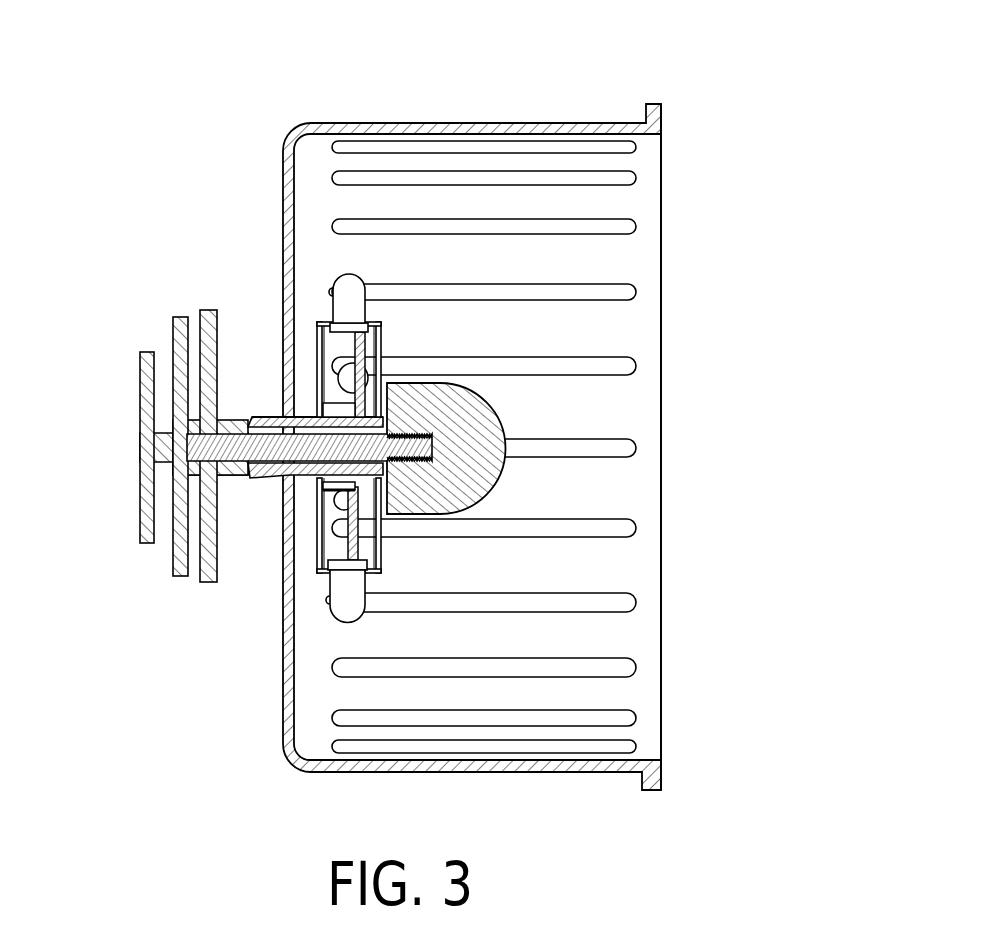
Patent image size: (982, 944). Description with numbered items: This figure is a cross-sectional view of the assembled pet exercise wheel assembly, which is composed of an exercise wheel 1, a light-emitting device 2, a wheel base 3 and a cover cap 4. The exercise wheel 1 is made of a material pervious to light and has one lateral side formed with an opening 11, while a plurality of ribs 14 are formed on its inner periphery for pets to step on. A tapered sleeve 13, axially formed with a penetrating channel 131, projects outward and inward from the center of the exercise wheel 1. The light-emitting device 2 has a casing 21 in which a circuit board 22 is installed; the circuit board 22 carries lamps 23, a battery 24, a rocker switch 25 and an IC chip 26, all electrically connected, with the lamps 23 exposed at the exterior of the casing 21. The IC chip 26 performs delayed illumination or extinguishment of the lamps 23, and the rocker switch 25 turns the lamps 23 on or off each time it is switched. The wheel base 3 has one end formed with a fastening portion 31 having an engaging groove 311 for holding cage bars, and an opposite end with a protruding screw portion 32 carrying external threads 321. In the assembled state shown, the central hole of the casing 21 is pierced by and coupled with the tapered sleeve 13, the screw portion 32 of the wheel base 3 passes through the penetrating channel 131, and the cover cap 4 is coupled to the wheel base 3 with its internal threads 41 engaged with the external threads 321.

The exercise wheel 1 is at (372, 125).
The opening 11 is at (635, 410).
The tapered sleeve 13 is at (370, 415).
The ribs 14 is at (512, 183).
The light-emitting device 2 is at (477, 439).
The casing 21 is at (312, 567).
The circuit board 22 is at (362, 538).
The lamps 23 is at (348, 278).
The battery 24 is at (330, 483).
The rocker switch 25 is at (342, 497).
The IC chip 26 is at (353, 375).
The wheel base 3 is at (148, 404).
The fastening portion 31 is at (174, 319).
The engaging groove 311 is at (192, 328).
The screw portion 32 is at (277, 447).
The cover cap 4 is at (470, 470).
The internal threads 41 is at (420, 437).
The external threads 321 is at (409, 459).
The penetrating channel 131 is at (448, 518).